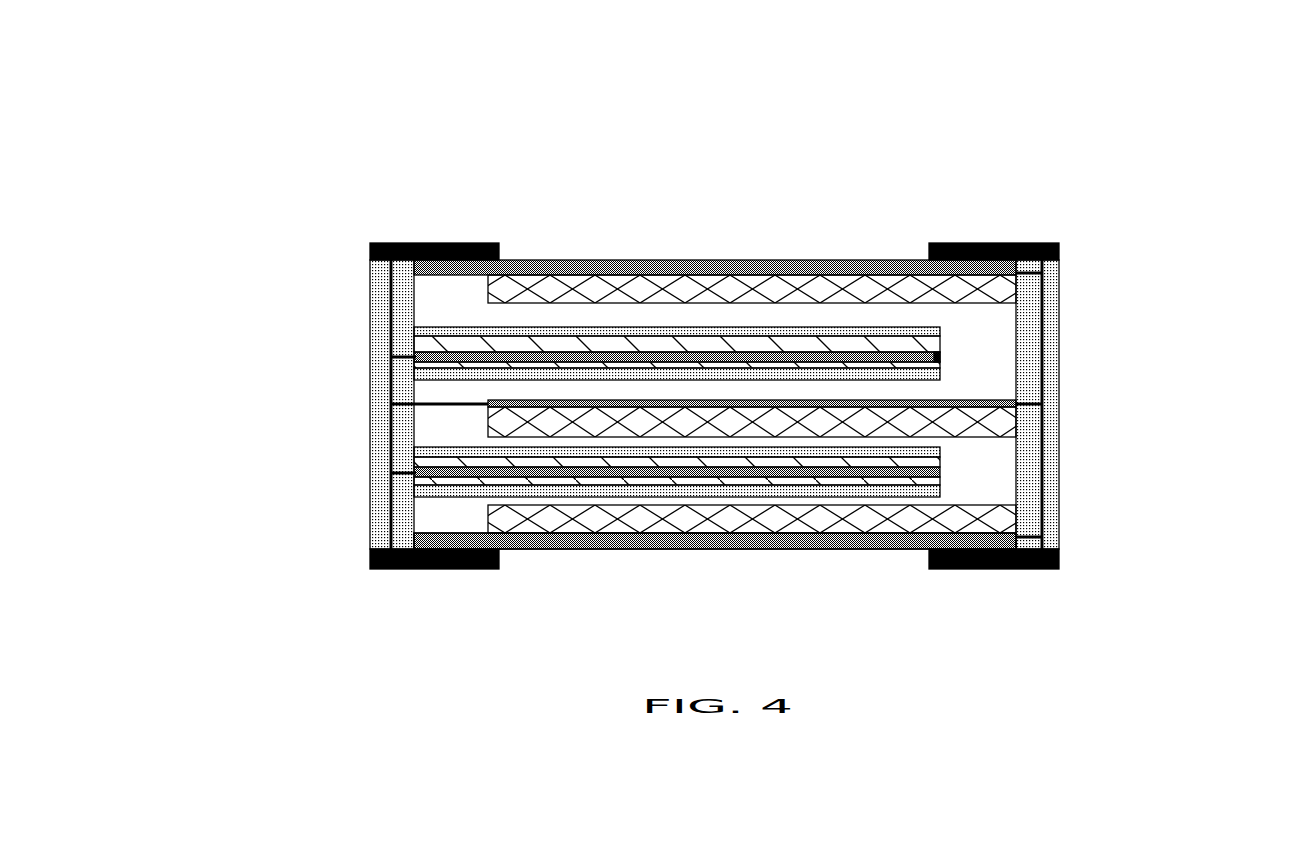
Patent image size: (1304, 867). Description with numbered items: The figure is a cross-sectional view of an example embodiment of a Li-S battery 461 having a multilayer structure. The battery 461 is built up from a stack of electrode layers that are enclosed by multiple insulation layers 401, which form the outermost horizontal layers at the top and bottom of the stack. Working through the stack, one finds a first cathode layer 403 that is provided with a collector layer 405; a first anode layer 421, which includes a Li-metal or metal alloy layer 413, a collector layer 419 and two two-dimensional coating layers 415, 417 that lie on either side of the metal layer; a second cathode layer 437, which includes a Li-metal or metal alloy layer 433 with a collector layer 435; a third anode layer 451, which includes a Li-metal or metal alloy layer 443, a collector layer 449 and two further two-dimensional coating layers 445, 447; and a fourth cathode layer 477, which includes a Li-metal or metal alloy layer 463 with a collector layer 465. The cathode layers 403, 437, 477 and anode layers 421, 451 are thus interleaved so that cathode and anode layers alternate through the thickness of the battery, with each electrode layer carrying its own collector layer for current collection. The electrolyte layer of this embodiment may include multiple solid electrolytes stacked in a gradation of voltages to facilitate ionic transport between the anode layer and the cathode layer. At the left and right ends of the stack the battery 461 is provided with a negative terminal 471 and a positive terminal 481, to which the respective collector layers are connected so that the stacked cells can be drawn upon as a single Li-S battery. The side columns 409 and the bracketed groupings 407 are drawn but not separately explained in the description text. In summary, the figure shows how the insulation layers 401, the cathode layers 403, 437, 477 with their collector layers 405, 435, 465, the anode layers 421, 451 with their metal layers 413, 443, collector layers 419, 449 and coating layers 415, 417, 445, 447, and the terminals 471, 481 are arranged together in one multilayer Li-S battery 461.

The insulation layer 401 is at (715, 400).
The first cathode layer 403 is at (997, 517).
The collector layer 405 is at (1042, 536).
The bottom layer stack 407 is at (1170, 507).
The side electrode 409 is at (967, 368).
The Li-metal or metal alloy layer 413 is at (940, 462).
The 2D coating layer 415 is at (942, 452).
The 2D coating layer 417 is at (935, 490).
The collector layer 419 is at (405, 475).
The first anode layer 421 is at (1128, 413).
The Li-metal or metal alloy layer 433 is at (488, 422).
The collector layer 435 is at (391, 404).
The second cathode layer 437 is at (325, 385).
The Li-metal or metal alloy layer 443 is at (414, 345).
The 2D coating layer 445 is at (414, 330).
The 2D coating layer 447 is at (414, 369).
The collector layer 449 is at (940, 357).
The third anode layer 451 is at (238, 317).
The Li-S battery with a multilayer structure 461 is at (978, 130).
The Li-metal or metal alloy layer 463 is at (1003, 290).
The collector layer 465 is at (1020, 270).
The negative terminal 471 is at (412, 381).
The fourth cathode layer 477 is at (1212, 237).
The positive terminal 481 is at (1012, 381).